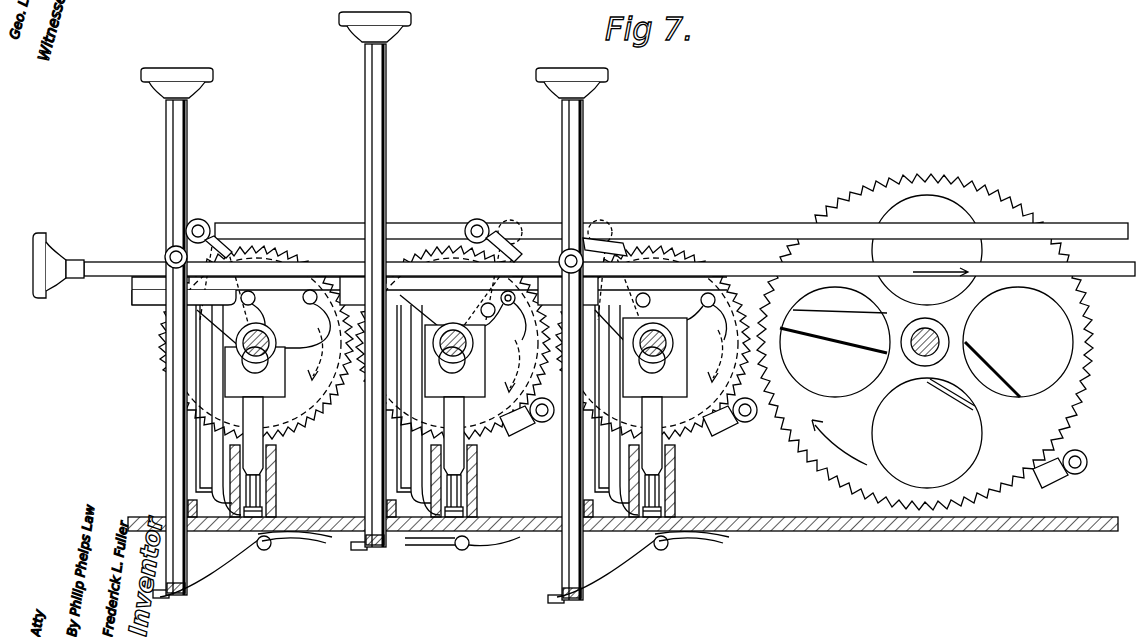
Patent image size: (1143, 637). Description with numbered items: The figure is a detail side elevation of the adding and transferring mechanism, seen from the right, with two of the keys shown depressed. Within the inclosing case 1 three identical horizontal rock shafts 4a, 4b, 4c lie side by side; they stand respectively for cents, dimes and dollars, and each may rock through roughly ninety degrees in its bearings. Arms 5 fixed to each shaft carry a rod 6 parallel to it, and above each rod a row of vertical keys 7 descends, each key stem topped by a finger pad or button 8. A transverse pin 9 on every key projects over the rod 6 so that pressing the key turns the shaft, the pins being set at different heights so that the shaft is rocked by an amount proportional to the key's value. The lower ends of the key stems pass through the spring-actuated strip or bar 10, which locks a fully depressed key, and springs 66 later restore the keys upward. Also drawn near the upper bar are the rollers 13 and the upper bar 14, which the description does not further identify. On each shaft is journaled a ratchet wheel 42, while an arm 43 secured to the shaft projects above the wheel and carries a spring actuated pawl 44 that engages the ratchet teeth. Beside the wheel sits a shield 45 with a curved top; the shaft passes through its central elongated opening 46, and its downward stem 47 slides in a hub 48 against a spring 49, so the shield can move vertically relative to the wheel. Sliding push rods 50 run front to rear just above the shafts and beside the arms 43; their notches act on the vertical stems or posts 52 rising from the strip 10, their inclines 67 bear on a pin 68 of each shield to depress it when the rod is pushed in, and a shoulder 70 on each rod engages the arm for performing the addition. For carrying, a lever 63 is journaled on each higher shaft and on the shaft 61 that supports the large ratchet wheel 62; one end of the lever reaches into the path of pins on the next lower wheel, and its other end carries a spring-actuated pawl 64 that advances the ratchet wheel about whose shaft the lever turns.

The inclosing case 1 is at (771, 518).
The rock shaft 4a is at (262, 345).
The rock shaft 4b is at (459, 345).
The rock shaft 4c is at (659, 345).
The arm 5 is at (452, 358).
The rod 6 is at (419, 410).
The key 7 is at (375, 323).
The finger pad or button 8 is at (198, 88).
The transverse pin 9 is at (418, 293).
The strip or bar 10 is at (188, 503).
The roller 13 is at (204, 215).
The upper bar 14 is at (324, 228).
The ratchet wheel 42 is at (688, 447).
The arm 43 is at (168, 253).
The spring actuated pawl 44 is at (226, 246).
The shield 45 is at (706, 322).
The central elongated opening 46 is at (285, 383).
The stem 47 is at (260, 410).
The hub 48 is at (278, 472).
The spring 49 is at (277, 505).
The sliding push rod 50 is at (116, 264).
The vertical stem or post 52 is at (190, 431).
The shaft 61 is at (945, 346).
The large ratchet wheel 62 is at (980, 194).
The lever 63 is at (1082, 444).
The spring-actuated pawl 64 is at (532, 434).
The spring 66 is at (230, 560).
The incline 67 is at (131, 285).
The pin 68 is at (312, 304).
The shoulder 70 is at (140, 297).